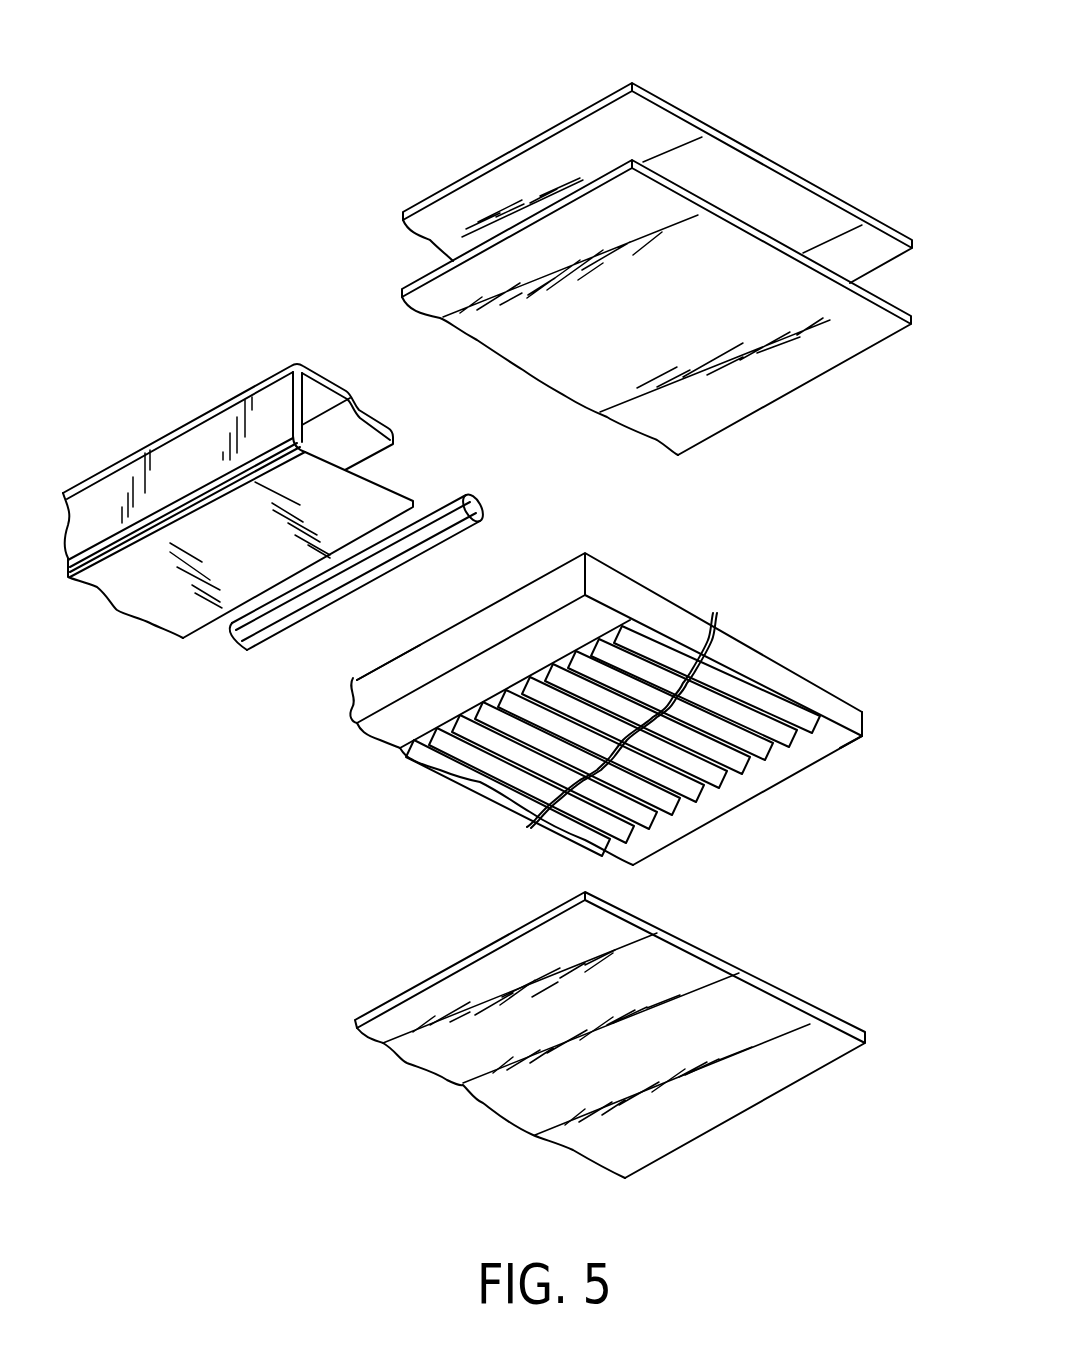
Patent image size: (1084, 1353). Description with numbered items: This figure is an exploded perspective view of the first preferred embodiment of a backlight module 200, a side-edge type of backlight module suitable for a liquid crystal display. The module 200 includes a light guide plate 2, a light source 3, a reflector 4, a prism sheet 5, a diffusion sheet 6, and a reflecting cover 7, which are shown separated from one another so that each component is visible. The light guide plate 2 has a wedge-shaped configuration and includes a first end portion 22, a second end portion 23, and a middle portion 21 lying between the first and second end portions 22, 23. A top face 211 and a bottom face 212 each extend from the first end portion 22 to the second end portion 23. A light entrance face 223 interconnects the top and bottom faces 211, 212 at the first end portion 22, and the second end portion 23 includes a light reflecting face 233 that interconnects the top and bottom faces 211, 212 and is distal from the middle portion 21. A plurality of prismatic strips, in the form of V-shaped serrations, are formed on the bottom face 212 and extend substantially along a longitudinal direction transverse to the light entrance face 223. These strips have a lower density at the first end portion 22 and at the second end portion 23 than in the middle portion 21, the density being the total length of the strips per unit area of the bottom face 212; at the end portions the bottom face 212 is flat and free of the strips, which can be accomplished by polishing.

The backlight module 200 is at (874, 93).
The light guide plate 2 is at (833, 523).
The middle portion 21 is at (773, 604).
The top face 211 is at (710, 624).
The bottom face 212 is at (720, 675).
The first end portion 22 is at (637, 539).
The light entrance face 223 is at (392, 672).
The second end portion 23 is at (891, 672).
The light reflecting face 233 is at (863, 723).
The light source 3 is at (473, 507).
The reflector 4 is at (765, 1022).
The prism sheet 5 is at (453, 288).
The diffusion sheet 6 is at (567, 147).
The reflecting cover 7 is at (220, 437).